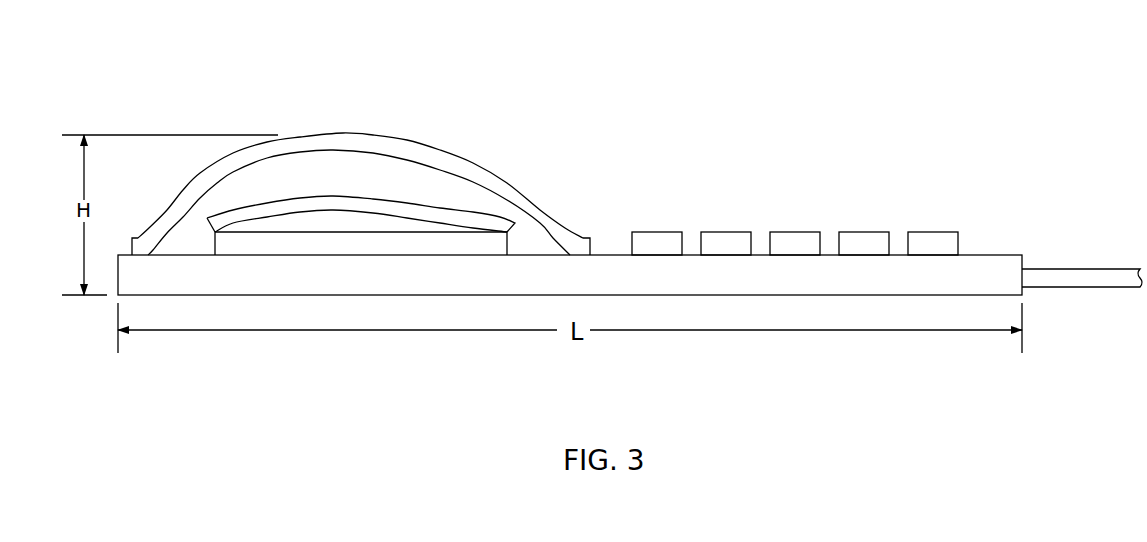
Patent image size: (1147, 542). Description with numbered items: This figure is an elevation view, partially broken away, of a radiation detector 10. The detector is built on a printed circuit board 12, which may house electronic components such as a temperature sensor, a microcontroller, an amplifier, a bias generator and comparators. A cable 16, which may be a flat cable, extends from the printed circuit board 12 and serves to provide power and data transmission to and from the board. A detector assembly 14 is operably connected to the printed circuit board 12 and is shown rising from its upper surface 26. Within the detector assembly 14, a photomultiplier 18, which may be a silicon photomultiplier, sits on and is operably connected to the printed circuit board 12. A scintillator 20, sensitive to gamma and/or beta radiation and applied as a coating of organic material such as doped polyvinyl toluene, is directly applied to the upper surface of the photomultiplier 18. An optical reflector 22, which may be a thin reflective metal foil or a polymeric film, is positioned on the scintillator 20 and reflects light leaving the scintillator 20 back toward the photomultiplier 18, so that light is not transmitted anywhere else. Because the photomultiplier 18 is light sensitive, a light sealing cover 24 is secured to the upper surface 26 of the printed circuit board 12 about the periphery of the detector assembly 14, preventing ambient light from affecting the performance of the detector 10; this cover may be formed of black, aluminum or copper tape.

The radiation detector 10 is at (825, 58).
The printed circuit board 12 is at (995, 263).
The detector assembly 14 is at (361, 167).
The cable 16 is at (1083, 276).
The photomultiplier 18 is at (403, 174).
The scintillator 20 is at (361, 174).
The optical reflector 22 is at (428, 208).
The light sealing cover 24 is at (317, 140).
The upper surface 26 is at (612, 255).